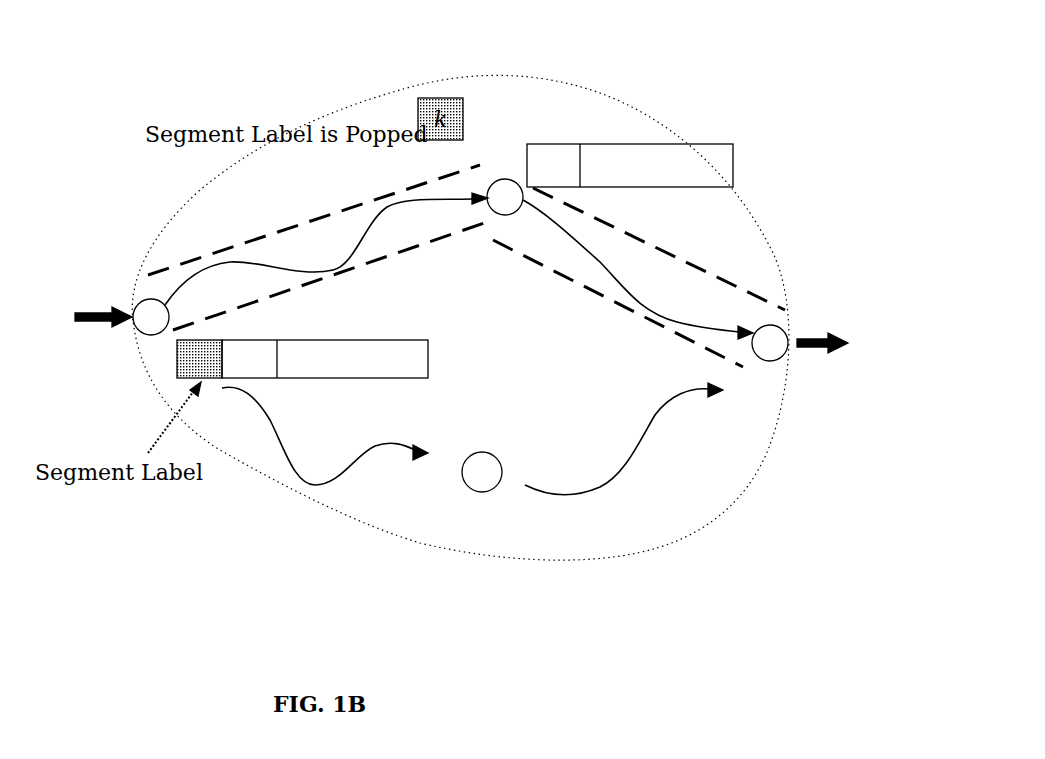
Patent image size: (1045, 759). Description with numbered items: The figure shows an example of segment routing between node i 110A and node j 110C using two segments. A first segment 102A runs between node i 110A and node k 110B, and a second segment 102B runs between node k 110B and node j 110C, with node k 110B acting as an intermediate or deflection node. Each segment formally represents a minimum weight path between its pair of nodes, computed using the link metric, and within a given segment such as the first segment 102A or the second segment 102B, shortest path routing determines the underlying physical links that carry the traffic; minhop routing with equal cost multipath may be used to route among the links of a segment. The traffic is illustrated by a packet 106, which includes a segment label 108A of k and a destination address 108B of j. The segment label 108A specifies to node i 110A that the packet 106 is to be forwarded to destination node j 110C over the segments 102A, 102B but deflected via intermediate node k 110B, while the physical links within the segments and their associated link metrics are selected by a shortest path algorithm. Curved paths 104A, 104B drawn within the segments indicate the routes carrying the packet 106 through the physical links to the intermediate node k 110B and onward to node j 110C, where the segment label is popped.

The first segment 102A is at (237, 241).
The second segment 102B is at (727, 282).
The path from node i to node k 104A is at (282, 458).
The path from node k to node j 104B is at (607, 485).
The packet 106 is at (325, 359).
The segment label 108A is at (177, 371).
The destination address 108B is at (267, 373).
The node i 110A is at (143, 307).
The node k 110B is at (509, 178).
The node j 110C is at (785, 330).